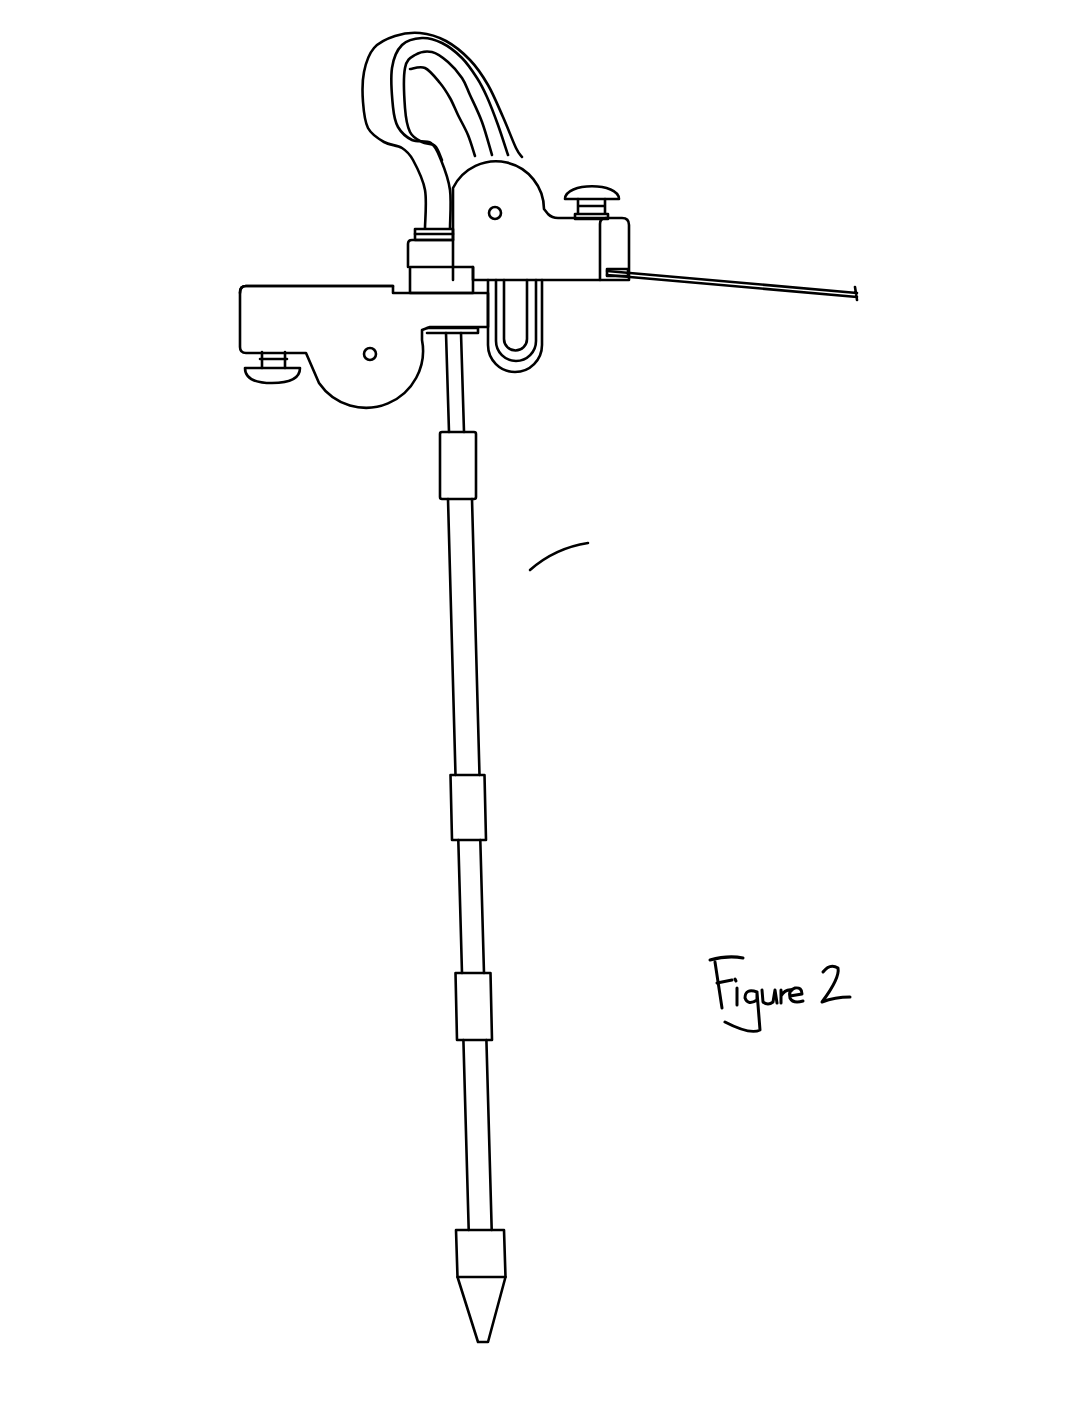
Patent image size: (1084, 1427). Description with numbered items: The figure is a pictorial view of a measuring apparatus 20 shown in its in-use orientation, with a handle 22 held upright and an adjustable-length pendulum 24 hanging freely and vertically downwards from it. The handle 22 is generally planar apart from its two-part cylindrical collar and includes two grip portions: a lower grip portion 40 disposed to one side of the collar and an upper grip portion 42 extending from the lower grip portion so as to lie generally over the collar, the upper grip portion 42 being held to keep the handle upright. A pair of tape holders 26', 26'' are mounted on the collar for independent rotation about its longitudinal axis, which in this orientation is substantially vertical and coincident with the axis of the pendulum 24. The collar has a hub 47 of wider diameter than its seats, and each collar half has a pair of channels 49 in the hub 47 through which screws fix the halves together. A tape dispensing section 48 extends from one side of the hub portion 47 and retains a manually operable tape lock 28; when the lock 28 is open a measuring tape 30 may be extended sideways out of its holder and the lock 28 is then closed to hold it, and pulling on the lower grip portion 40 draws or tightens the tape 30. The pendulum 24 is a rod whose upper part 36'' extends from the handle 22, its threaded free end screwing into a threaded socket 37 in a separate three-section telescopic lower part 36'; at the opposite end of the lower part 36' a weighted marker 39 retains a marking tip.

The measuring apparatus 20 is at (658, 689).
The handle 22 is at (551, 104).
The pendulum 24 is at (465, 667).
The tape holder 26' is at (516, 299).
The tape holder 26'' is at (364, 290).
The tape lock 28 is at (605, 185).
The measuring tape 30 is at (725, 280).
The lower part 36' is at (524, 906).
The upper part 36'' is at (510, 381).
The threaded socket 37 is at (467, 457).
The weighted marker 39 is at (492, 1302).
The lower grip portion 40 is at (537, 327).
The upper grip portion 42 is at (462, 58).
The hub 47 is at (520, 183).
The tape dispensing section 48 is at (592, 265).
The channels 49 is at (412, 243).